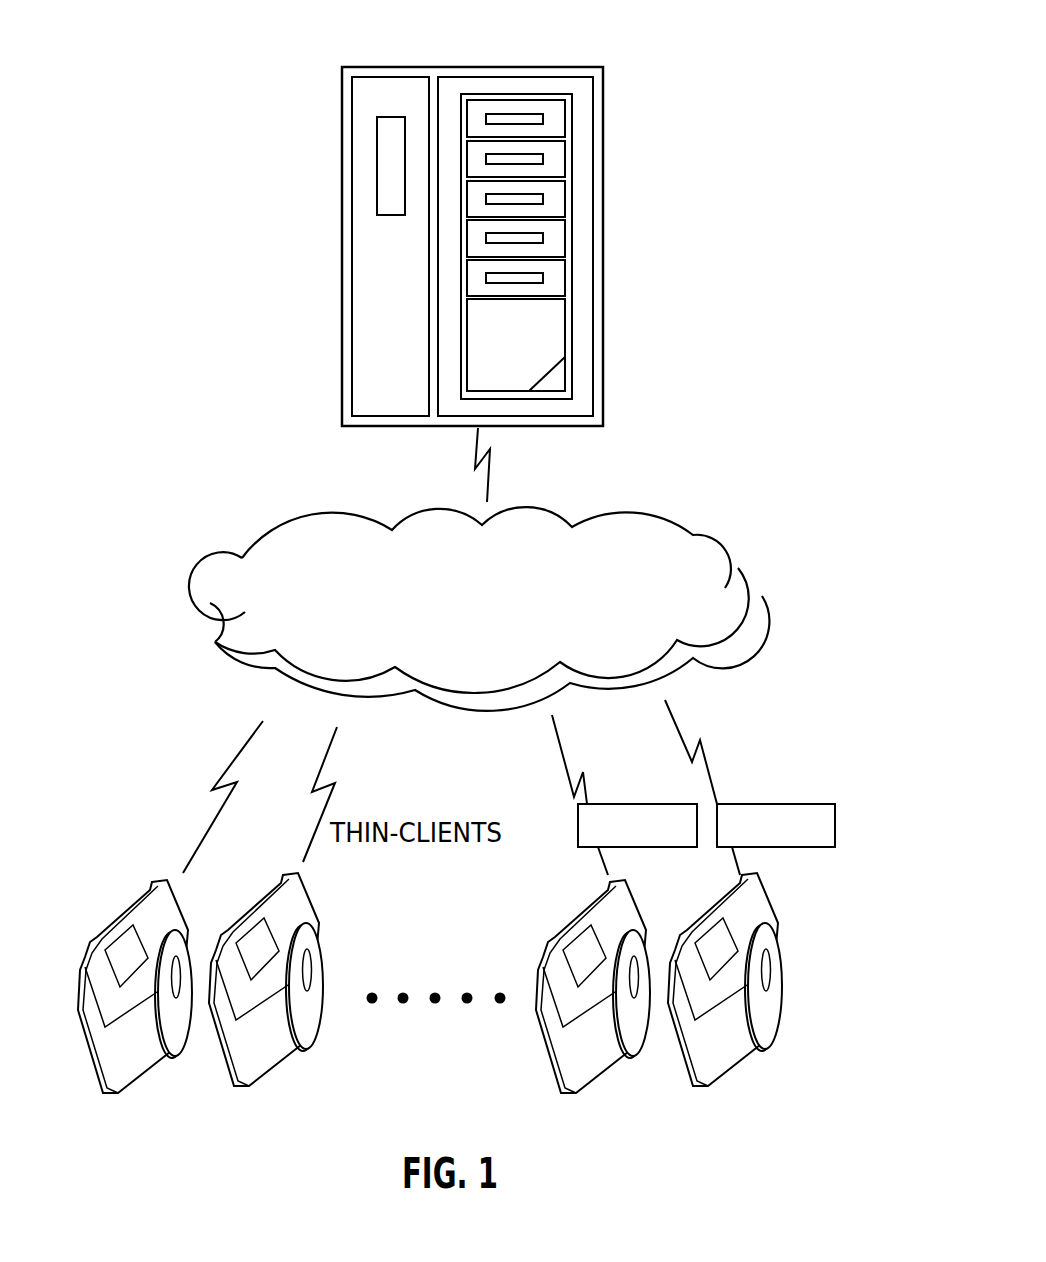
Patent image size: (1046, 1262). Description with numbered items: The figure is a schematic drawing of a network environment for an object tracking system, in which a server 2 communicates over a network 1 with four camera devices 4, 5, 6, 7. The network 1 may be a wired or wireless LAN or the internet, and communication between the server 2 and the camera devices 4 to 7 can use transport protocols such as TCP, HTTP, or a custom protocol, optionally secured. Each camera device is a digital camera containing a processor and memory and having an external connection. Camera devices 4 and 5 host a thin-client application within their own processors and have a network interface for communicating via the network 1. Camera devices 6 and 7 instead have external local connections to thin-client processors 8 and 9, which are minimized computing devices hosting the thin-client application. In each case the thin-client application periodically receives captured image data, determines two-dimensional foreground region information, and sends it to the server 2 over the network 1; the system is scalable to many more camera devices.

The network 1 is at (716, 533).
The server 2 is at (617, 94).
The camera device 4 is at (187, 908).
The camera device 5 is at (327, 913).
The camera device 6 is at (647, 897).
The camera device 7 is at (783, 903).
The thin-client processor 8 is at (627, 802).
The thin-client processor 9 is at (770, 802).